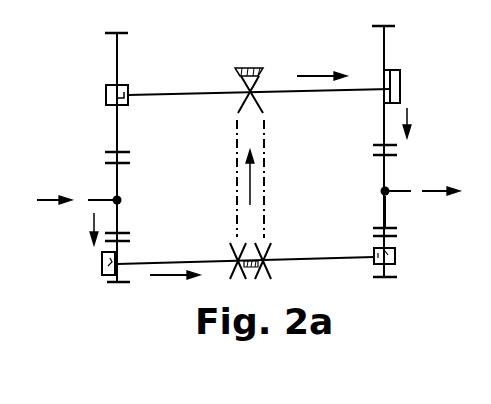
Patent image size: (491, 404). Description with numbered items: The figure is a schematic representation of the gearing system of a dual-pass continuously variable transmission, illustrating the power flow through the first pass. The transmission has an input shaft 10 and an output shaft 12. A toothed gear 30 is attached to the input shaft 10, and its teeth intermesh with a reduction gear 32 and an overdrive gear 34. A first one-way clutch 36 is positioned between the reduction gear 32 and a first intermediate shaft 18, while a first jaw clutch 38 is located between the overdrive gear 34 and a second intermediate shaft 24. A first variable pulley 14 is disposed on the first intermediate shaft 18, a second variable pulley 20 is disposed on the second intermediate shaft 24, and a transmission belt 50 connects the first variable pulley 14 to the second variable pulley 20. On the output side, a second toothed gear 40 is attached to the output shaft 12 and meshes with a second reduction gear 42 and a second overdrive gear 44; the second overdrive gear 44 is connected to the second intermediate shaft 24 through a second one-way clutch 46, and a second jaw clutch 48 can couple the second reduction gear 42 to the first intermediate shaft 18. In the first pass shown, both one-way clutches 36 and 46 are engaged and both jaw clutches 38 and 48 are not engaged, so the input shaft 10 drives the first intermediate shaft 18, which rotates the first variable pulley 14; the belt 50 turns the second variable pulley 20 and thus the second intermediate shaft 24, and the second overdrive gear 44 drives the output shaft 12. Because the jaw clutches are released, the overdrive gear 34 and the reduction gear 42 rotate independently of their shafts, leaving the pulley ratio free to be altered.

The input shaft 10 is at (97, 200).
The output shaft 12 is at (402, 191).
The first variable pulley 14 is at (238, 79).
The first intermediate shaft 18 is at (193, 93).
The second variable pulley 20 is at (276, 273).
The second intermediate shaft 24 is at (207, 262).
The toothed gear 30 is at (117, 172).
The reduction gear 32 is at (113, 52).
The overdrive gear 34 is at (113, 281).
The first one-way clutch 36 is at (105, 95).
The first jaw clutch 38 is at (102, 262).
The second toothed gear 40 is at (387, 208).
The second reduction gear 42 is at (385, 52).
The second overdrive gear 44 is at (397, 270).
The second one-way clutch 46 is at (396, 255).
The second jaw clutch 48 is at (401, 82).
The transmission belt 50 is at (255, 206).